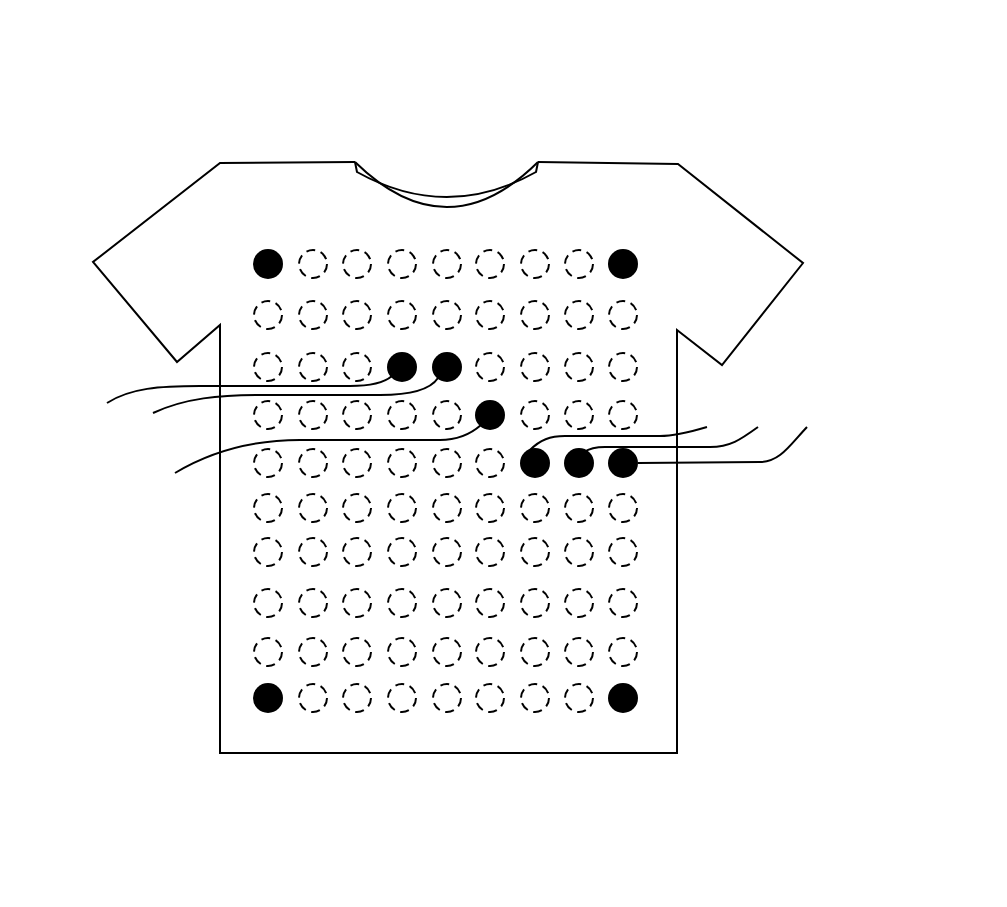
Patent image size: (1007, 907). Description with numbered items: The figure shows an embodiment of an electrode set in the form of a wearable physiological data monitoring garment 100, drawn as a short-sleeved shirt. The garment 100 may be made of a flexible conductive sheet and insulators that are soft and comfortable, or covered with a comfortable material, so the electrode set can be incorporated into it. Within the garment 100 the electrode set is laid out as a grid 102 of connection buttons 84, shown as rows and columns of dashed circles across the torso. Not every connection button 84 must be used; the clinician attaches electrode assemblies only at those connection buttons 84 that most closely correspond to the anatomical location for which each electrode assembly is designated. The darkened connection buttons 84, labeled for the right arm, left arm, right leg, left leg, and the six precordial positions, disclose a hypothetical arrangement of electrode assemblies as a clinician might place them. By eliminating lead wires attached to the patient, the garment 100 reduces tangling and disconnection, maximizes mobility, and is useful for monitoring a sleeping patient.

The physiological data monitoring garment 100 is at (639, 35).
The grid of connection buttons 102 is at (226, 576).
The connection buttons 84 is at (253, 262).